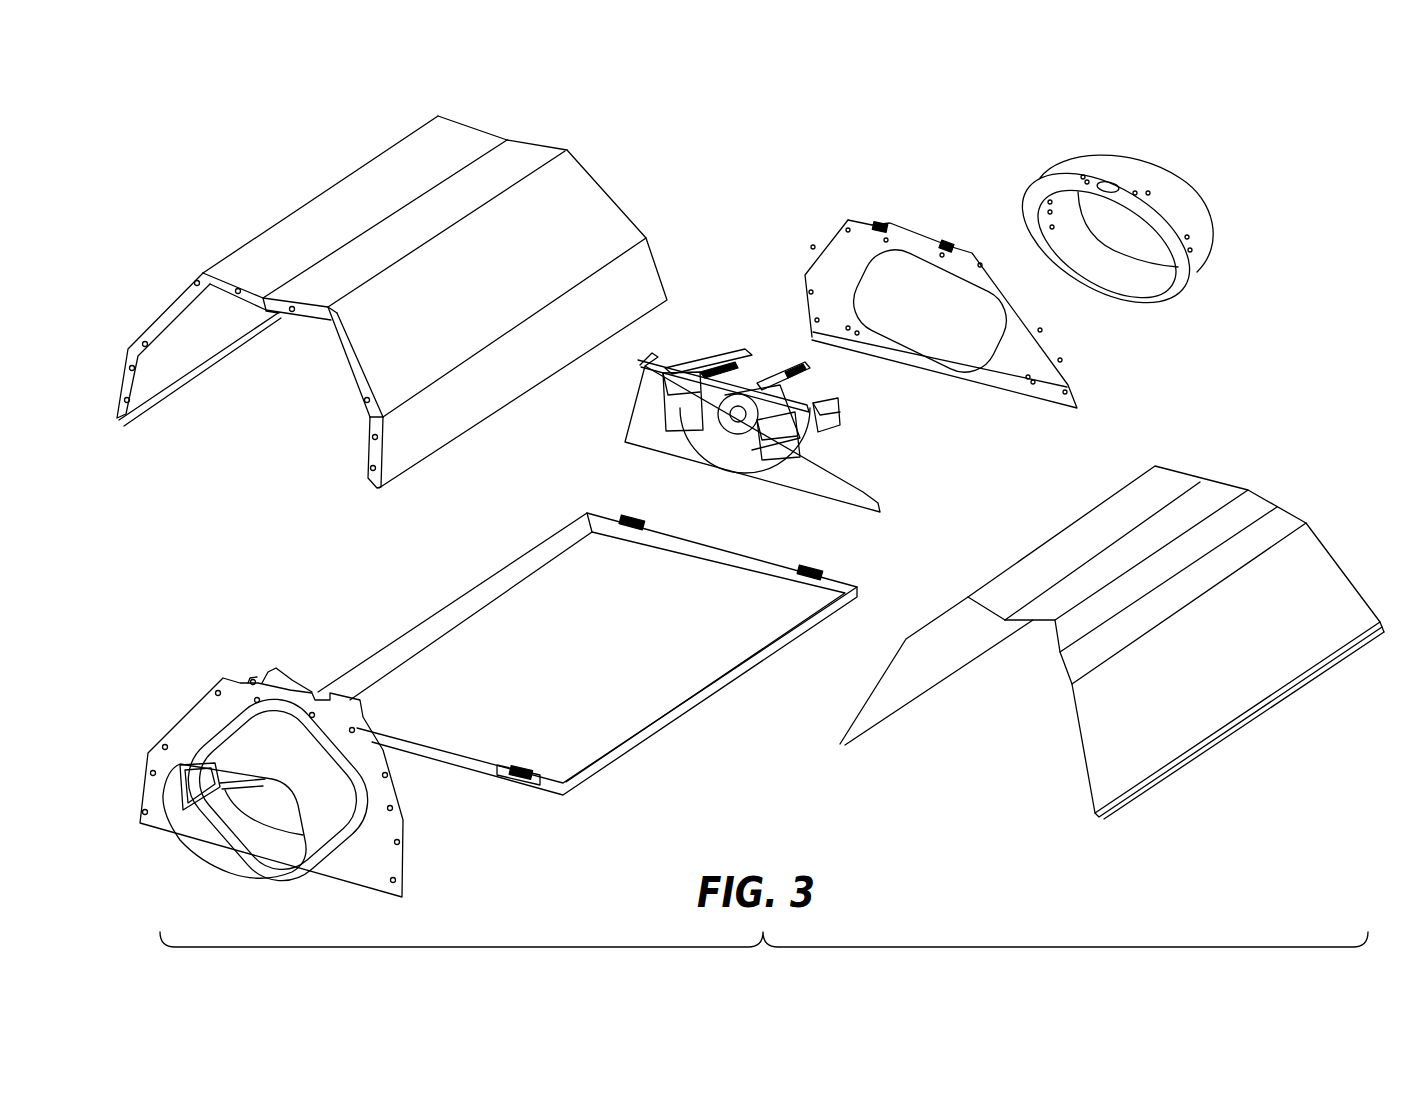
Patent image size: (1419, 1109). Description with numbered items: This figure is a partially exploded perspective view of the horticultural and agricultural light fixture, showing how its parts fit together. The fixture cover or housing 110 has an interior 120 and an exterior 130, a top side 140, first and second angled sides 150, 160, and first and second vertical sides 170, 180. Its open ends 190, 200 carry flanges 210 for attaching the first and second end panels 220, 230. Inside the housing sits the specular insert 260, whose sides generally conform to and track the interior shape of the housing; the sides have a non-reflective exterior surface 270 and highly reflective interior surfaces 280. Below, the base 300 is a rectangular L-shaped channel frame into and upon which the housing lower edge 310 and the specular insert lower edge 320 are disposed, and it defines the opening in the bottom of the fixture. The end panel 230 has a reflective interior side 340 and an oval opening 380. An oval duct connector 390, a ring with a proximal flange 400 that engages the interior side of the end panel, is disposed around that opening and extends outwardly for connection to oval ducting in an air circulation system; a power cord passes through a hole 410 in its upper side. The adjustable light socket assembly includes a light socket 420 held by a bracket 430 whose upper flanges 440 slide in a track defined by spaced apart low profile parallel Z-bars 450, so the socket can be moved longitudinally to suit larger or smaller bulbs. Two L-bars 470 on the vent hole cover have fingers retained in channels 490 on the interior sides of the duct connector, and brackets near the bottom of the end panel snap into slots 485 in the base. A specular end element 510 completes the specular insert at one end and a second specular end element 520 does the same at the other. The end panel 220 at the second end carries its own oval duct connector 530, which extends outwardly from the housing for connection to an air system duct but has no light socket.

The fixture cover or housing 110 is at (625, 145).
The open end 200 is at (625, 190).
The top side 140 is at (468, 141).
The exterior 130 is at (380, 207).
The interior 120 is at (213, 350).
The second angled side 160 is at (181, 290).
The flanges 210 is at (277, 318).
The first angled side 150 is at (374, 354).
The first vertical side 170 is at (391, 439).
The second vertical side 180 is at (143, 377).
The housing lower edge 310 is at (387, 482).
The open end 190 is at (262, 440).
The second end panel 230 is at (867, 228).
The reflective interior side 340 is at (1047, 371).
The oval opening 380 is at (955, 330).
The proximal flange 400 is at (1045, 182).
The oval duct connector 390 is at (1193, 177).
The hole 410 is at (1107, 183).
The specular end element 510 is at (797, 480).
The bracket 430 is at (787, 392).
The light socket 420 is at (727, 433).
The Z-bars 450 is at (723, 347).
The upper flanges 440 is at (782, 363).
The L-bars 470 is at (667, 443).
The channels 490 is at (833, 425).
The base 300 is at (713, 690).
The slots 485 is at (630, 523).
The non-reflective exterior surface 270 is at (1245, 656).
The interior surfaces 280 is at (960, 656).
The specular insert 260 is at (1282, 478).
The specular insert lower edge 320 is at (1088, 808).
The first end panel 220 is at (198, 720).
The second specular end element 520 is at (268, 670).
The oval duct connector 530 is at (197, 853).